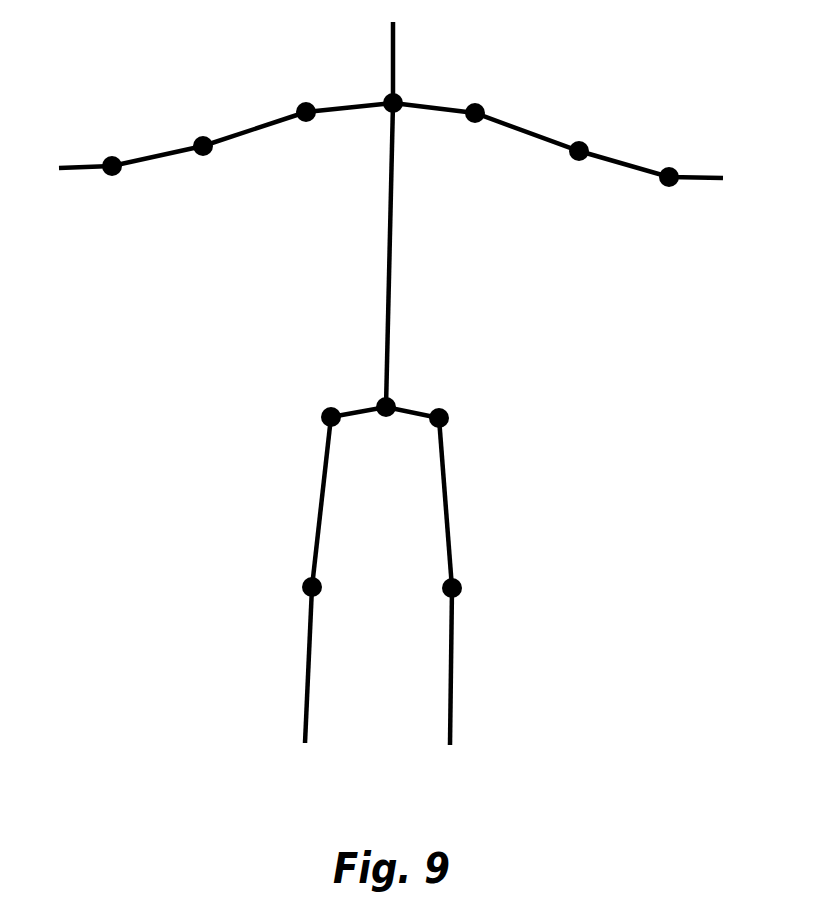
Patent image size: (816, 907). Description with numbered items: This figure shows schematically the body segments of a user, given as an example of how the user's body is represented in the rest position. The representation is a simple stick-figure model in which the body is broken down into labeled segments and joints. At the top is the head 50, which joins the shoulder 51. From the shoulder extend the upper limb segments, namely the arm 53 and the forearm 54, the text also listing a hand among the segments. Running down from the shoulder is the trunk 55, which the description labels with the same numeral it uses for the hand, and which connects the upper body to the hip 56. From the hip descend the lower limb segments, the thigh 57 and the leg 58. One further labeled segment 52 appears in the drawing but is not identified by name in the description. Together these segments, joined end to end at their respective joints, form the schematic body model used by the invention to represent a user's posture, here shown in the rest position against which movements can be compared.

The head 50 is at (395, 43).
The shoulder 51 is at (348, 103).
The arm joint (elbow) 52 is at (248, 127).
The arm 53 is at (153, 155).
The forearm 54 is at (83, 166).
The trunk 55 is at (392, 268).
The hip 56 is at (412, 405).
The thigh 57 is at (452, 520).
The leg 58 is at (453, 686).